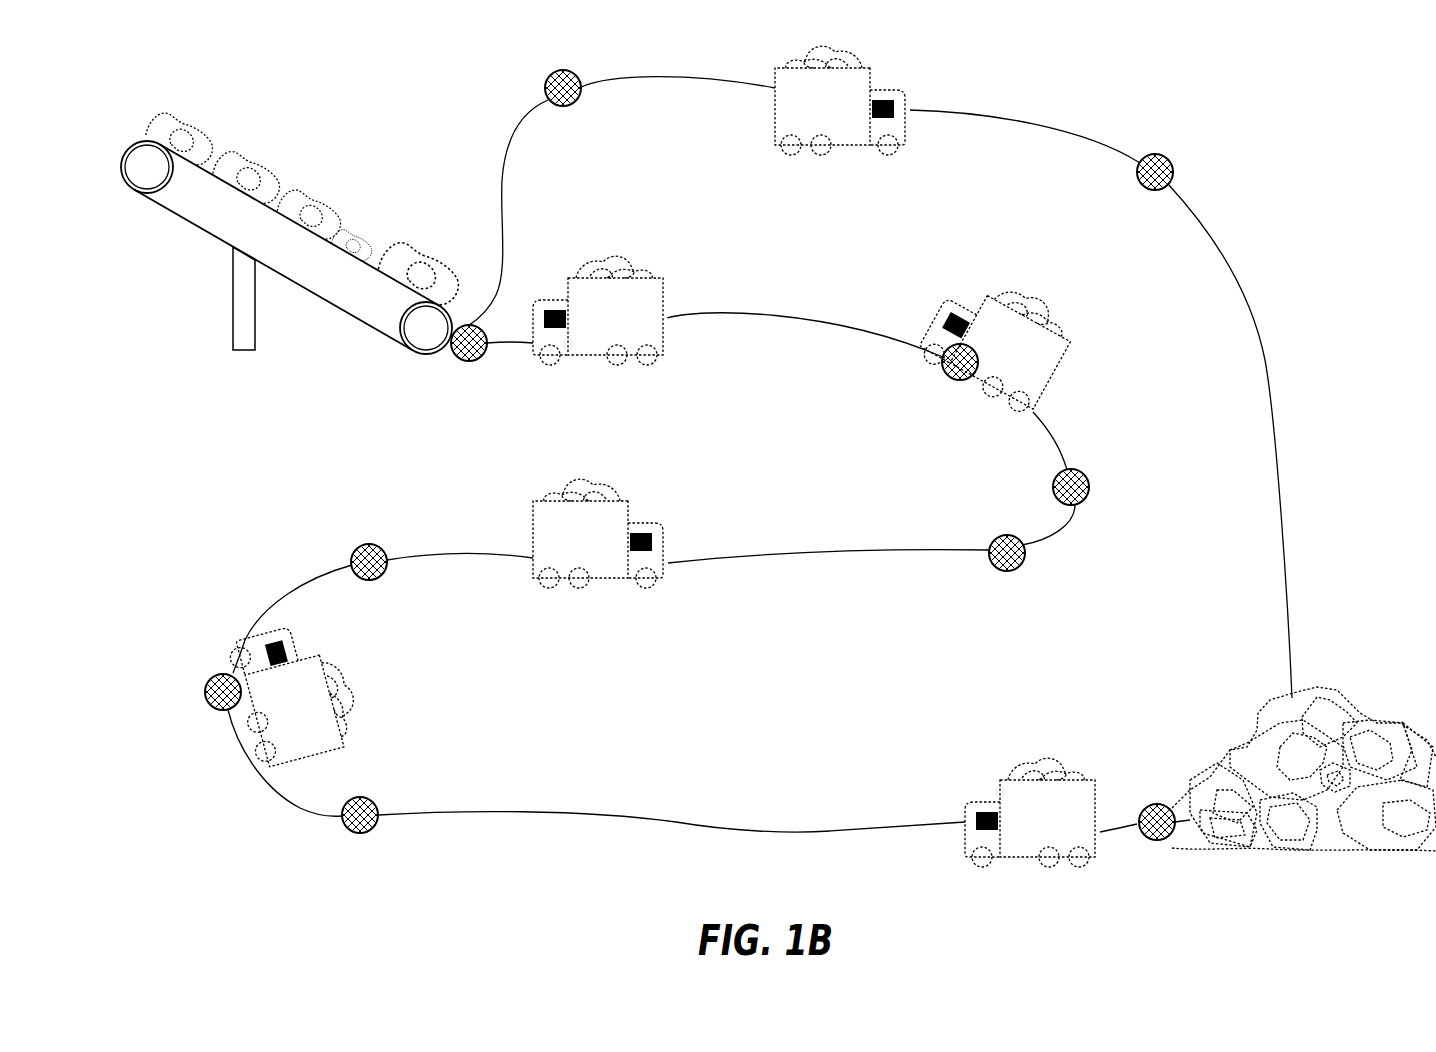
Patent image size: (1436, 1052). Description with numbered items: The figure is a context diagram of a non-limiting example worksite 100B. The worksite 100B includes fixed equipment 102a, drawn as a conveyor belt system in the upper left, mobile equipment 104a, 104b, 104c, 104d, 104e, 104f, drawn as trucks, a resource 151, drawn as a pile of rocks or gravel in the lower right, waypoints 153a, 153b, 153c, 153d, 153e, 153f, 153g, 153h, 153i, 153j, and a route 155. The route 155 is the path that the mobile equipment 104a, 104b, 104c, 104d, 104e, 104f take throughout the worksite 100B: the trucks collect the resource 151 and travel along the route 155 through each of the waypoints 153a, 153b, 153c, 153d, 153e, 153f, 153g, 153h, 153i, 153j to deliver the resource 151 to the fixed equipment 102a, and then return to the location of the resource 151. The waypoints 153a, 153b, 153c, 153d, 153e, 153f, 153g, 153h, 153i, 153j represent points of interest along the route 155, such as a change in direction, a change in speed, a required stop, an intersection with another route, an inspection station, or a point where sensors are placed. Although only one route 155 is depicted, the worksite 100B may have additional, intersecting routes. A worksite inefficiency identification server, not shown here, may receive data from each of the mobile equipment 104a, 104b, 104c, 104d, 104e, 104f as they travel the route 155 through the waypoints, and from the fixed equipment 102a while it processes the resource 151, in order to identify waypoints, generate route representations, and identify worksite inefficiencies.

The worksite 100B is at (1276, 147).
The fixed equipment 102a is at (210, 238).
The mobile equipment 104a is at (1000, 778).
The mobile equipment 104b is at (330, 680).
The mobile equipment 104c is at (543, 528).
The mobile equipment 104d is at (987, 296).
The mobile equipment 104e is at (640, 264).
The mobile equipment 104f is at (773, 110).
The resource 151 is at (1320, 688).
The waypoint 153a is at (1140, 804).
The waypoint 153b is at (372, 800).
The waypoint 153c is at (216, 675).
The waypoint 153d is at (365, 545).
The waypoint 153e is at (992, 562).
The waypoint 153f is at (1053, 483).
The waypoint 153g is at (942, 362).
The waypoint 153h is at (462, 324).
The waypoint 153i is at (545, 90).
The waypoint 153j is at (1137, 180).
The route 155 is at (677, 822).